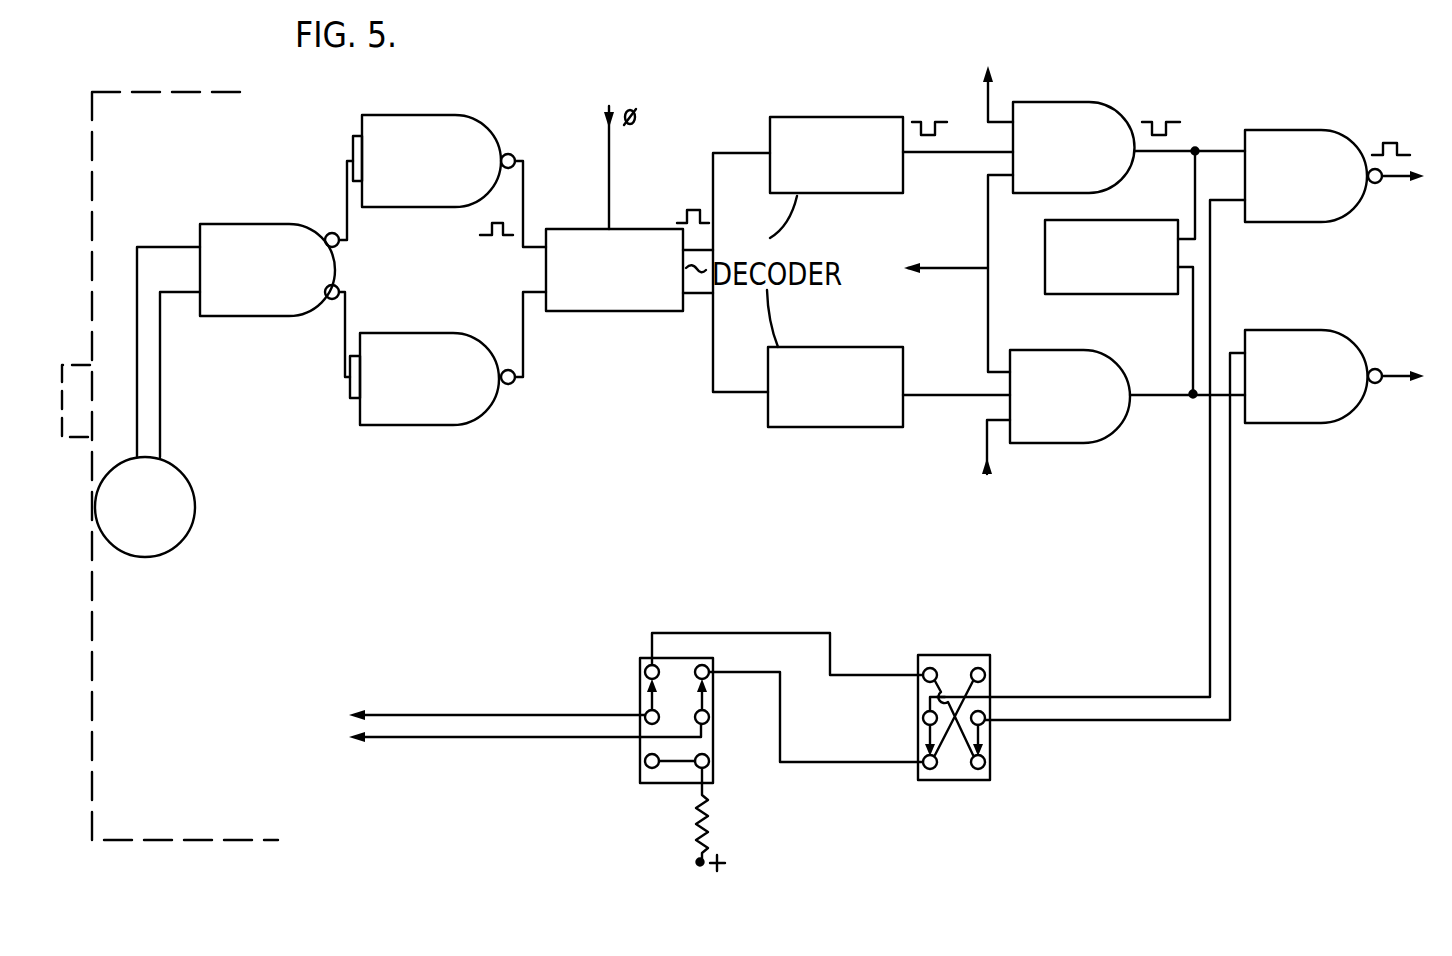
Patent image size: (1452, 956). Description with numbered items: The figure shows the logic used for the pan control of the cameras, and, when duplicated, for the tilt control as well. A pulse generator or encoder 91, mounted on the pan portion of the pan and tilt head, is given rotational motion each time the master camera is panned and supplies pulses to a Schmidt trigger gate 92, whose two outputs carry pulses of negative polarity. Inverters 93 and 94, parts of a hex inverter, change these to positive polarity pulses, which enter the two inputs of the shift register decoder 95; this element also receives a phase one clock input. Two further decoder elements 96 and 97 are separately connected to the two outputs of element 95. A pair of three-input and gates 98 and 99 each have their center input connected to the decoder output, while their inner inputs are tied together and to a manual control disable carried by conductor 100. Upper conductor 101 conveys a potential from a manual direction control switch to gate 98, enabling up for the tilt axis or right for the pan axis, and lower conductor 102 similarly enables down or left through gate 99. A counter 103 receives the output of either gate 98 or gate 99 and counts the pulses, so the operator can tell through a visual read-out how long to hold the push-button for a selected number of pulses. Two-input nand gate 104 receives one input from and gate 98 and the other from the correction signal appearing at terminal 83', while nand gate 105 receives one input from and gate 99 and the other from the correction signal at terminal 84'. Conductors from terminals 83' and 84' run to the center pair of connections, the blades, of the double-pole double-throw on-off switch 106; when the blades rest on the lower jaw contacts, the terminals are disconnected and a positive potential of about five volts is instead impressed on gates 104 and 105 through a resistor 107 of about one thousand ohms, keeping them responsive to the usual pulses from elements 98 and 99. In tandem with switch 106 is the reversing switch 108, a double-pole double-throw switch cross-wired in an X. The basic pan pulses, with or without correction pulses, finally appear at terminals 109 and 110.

The corrector pulse input terminal 83' is at (497, 696).
The corrector pulse input terminal 84' is at (525, 747).
The pulse generator (encoder) 91 is at (181, 470).
The gate 92 is at (254, 225).
The inverter 93 is at (478, 132).
The inverter 94 is at (468, 332).
The decoder (shift register) 95 is at (645, 228).
The decoder element 96 is at (851, 117).
The decoder element 97 is at (830, 349).
The and gate 98 is at (1102, 108).
The and gate 99 is at (1093, 347).
The conductor 100 is at (934, 264).
The upper conductor 101 is at (987, 103).
The lower conductor 102 is at (987, 442).
The counter 103 is at (1153, 220).
The nand gate 104 is at (1329, 136).
The nand gate 105 is at (1340, 330).
The on-off switch 106 is at (640, 666).
The resistor 107 is at (685, 819).
The reversing switch 108 is at (925, 655).
The output terminal 109 is at (1401, 180).
The output terminal 110 is at (1397, 384).